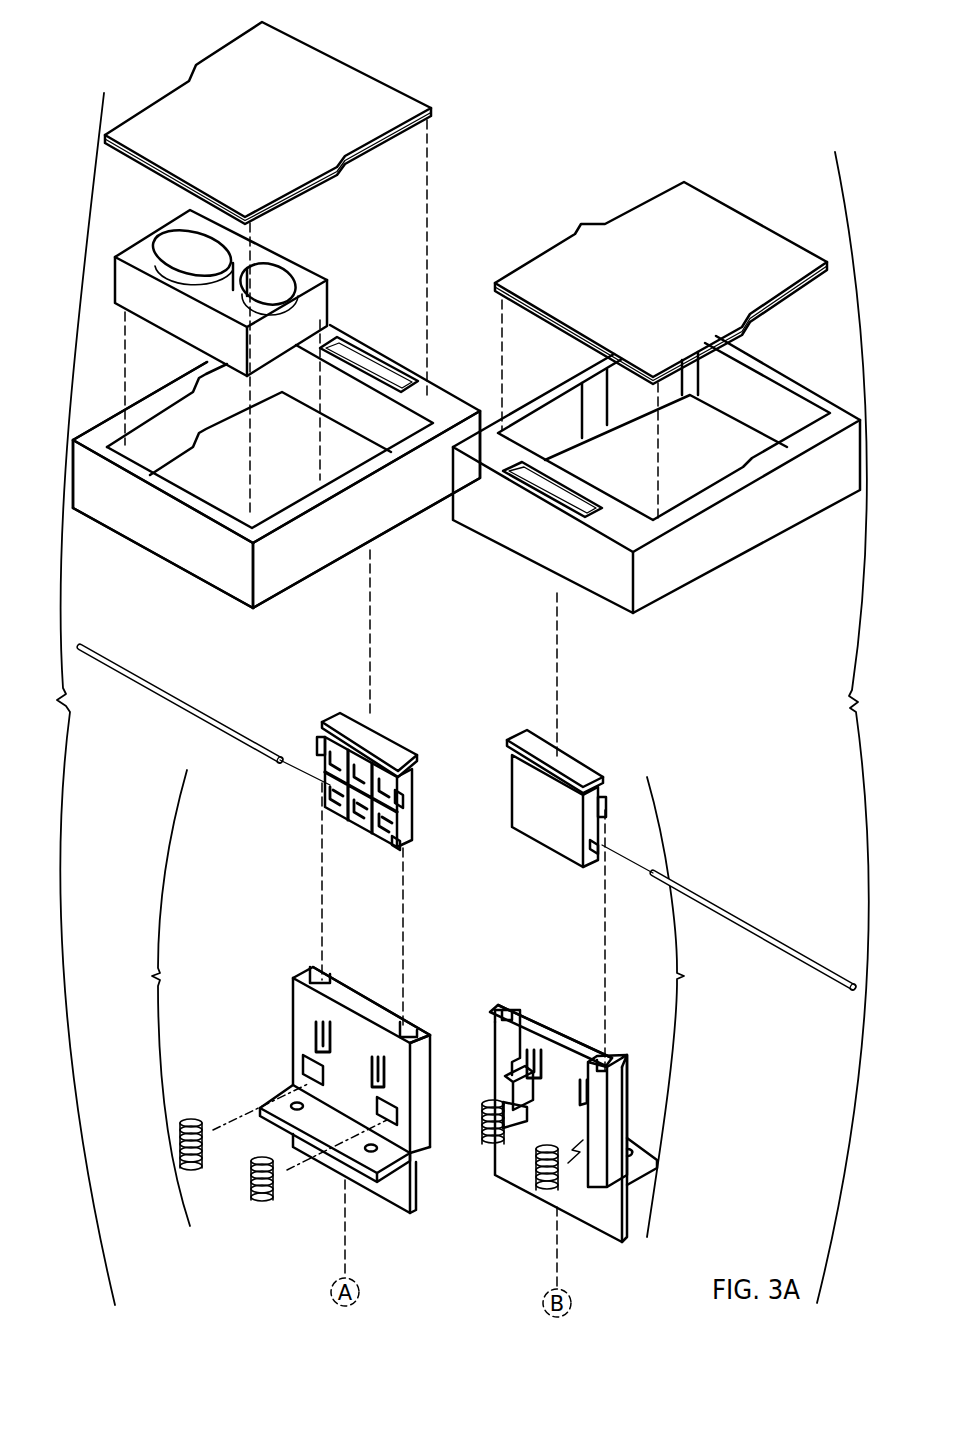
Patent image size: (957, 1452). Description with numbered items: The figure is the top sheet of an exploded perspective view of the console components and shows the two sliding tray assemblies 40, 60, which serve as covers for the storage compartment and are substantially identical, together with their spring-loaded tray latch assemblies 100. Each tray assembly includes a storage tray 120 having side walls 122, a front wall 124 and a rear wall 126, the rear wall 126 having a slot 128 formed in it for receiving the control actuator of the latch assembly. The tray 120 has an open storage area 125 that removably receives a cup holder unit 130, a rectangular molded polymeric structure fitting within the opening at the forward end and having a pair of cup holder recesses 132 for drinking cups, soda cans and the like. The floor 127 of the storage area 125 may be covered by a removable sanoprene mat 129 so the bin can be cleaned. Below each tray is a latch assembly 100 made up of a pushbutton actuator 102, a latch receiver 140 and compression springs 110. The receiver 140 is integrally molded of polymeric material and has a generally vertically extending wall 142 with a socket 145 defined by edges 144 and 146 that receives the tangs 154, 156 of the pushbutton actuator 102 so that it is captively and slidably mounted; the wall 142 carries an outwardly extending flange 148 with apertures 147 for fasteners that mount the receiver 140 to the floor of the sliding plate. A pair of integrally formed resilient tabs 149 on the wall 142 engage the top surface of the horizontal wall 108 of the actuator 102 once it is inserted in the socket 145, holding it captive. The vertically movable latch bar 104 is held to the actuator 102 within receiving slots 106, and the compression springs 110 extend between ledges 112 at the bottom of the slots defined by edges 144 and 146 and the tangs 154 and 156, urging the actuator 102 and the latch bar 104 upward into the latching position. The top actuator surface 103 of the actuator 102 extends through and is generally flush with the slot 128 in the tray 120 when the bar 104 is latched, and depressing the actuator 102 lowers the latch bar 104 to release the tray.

The mat 129 is at (347, 77).
The cup holder unit 130 is at (220, 269).
The cup holder recesses 132 is at (190, 240).
The slot 128 is at (375, 347).
The storage tray 120 is at (465, 473).
The side walls 122 is at (134, 393).
The front wall 124 is at (153, 530).
The open storage area 125 is at (300, 450).
The rear wall 126 is at (441, 387).
The floor 127 is at (217, 485).
The sliding tray assembly 40 is at (76, 699).
The sliding tray assembly 60 is at (850, 727).
The tray latch assembly 100 is at (417, 1003).
The pushbutton actuator 102 is at (482, 776).
The top actuator surface 103 is at (347, 722).
The latch bar 104 is at (163, 700).
The receiving slots 106 is at (409, 840).
The horizontal wall 108 is at (353, 800).
The tang 154 is at (316, 743).
The tang 156 is at (406, 793).
The latch receiver 140 is at (476, 1096).
The vertically extending wall 142 is at (337, 1020).
The edge 144 is at (328, 970).
The socket 145 is at (354, 998).
The edge 146 is at (413, 1018).
The apertures 147 is at (299, 1102).
The flange 148 is at (372, 1186).
The resilient tabs 149 is at (328, 1052).
The ledges 112 is at (518, 1102).
The compression springs 110 is at (253, 1166).